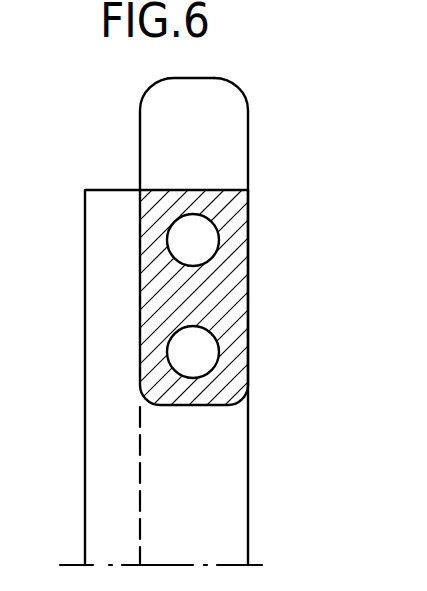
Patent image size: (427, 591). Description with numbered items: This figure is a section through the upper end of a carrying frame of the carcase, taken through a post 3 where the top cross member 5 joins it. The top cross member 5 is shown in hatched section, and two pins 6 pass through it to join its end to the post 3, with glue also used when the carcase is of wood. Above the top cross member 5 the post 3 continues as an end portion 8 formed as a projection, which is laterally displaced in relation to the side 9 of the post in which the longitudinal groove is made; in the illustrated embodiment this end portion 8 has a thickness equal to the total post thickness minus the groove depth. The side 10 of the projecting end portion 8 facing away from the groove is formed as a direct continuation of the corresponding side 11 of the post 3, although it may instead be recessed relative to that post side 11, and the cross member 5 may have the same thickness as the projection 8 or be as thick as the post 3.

The post 3 is at (215, 545).
The top cross member 5 is at (163, 317).
The pin 6 is at (185, 355).
The end portion 8 is at (152, 145).
The side of the post 9 is at (85, 298).
The side of the end portion 10 is at (248, 146).
The side of the post 11 is at (248, 483).